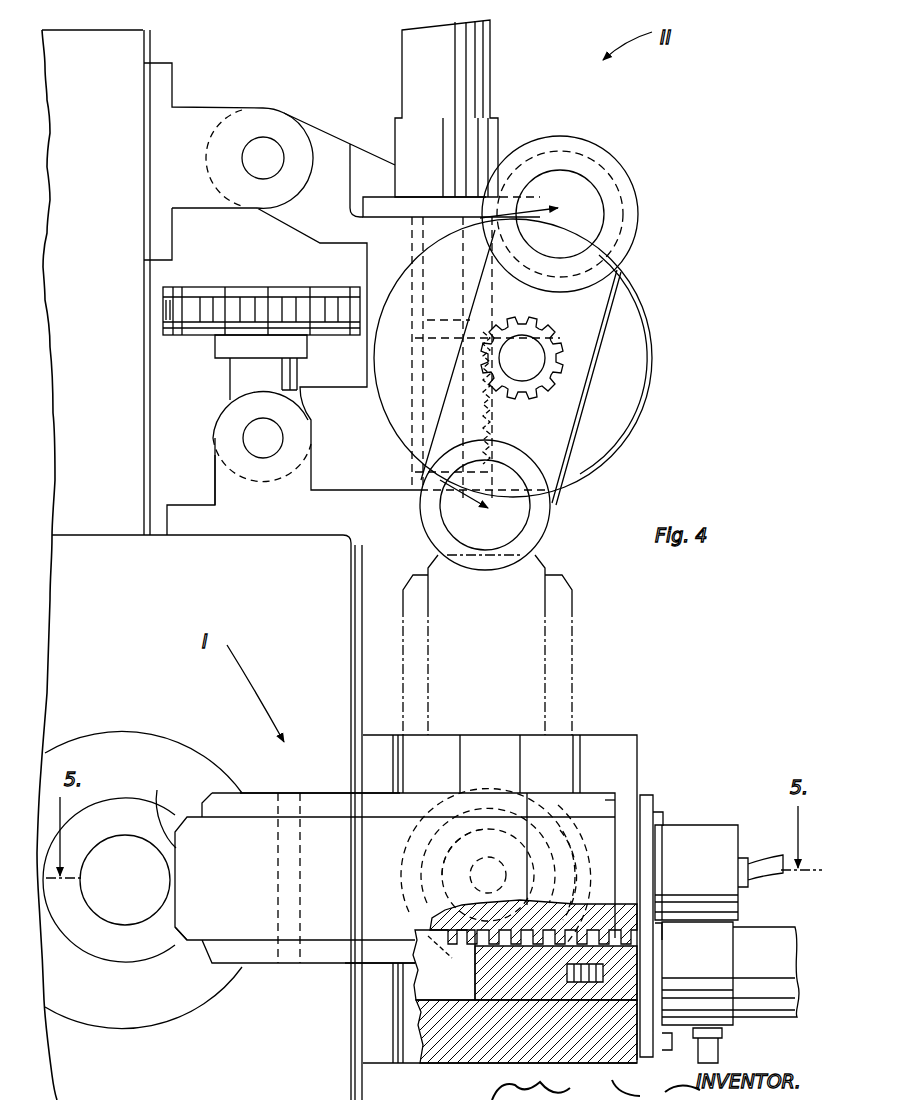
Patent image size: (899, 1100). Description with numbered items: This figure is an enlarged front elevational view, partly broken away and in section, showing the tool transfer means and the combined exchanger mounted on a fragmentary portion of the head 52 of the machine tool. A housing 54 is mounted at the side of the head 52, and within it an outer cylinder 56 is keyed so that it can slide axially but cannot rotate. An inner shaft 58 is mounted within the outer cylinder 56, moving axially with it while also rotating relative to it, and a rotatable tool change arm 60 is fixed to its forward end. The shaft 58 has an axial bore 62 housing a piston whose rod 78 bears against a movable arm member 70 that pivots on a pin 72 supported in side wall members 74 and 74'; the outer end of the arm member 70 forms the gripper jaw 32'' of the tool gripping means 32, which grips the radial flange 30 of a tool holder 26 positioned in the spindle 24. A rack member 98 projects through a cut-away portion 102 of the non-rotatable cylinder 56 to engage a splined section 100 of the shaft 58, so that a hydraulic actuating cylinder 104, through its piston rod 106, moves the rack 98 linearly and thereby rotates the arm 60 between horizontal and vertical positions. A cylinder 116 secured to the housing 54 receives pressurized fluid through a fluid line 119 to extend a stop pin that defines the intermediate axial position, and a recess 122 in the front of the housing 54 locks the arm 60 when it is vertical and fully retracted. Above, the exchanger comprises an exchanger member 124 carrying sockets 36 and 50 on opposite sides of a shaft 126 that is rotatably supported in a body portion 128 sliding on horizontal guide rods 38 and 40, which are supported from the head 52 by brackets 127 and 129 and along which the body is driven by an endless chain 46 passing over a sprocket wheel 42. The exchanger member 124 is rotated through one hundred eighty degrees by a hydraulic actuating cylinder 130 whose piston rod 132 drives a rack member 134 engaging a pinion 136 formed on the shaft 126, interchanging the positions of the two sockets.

The spindle 24 is at (133, 733).
The tool holder 26 is at (92, 918).
The radial flange 30 is at (113, 952).
The tool gripping means 32 is at (171, 961).
The gripper jaw 32'' is at (158, 804).
The socket 36 is at (572, 168).
The horizontal guide rod 38 is at (268, 148).
The horizontal guide rod 40 is at (254, 434).
The sprocket wheel 42 is at (214, 290).
The endless chain 46 is at (164, 318).
The socket 50 is at (528, 518).
The head 52 is at (112, 228).
The housing 54 is at (628, 754).
The outer cylinder 56 is at (612, 802).
The inner shaft 58 is at (418, 870).
The rotatable tool change arm 60 is at (582, 613).
The axial bore 62 is at (466, 836).
The movable arm member 70 is at (348, 898).
The pin 72 is at (278, 878).
The side wall member 74 is at (320, 774).
The side wall member 74' is at (365, 986).
The piston rod 78 is at (493, 868).
The rack member 98 is at (438, 1062).
The splined section 100 is at (444, 965).
The cut-away portion 102 is at (588, 875).
The hydraulic actuating cylinder 104 is at (784, 970).
The piston rod 106 is at (606, 1058).
The housing member or cylinder 116 is at (710, 833).
The fluid line 119 is at (767, 882).
The recess 122 is at (568, 742).
The exchanger member 124 is at (582, 418).
The shaft 126 is at (545, 357).
The bracket 127 is at (205, 122).
The body portion 128 is at (653, 396).
The bracket 129 is at (216, 482).
The hydraulic actuating cylinder 130 is at (486, 70).
The piston rod 132 is at (438, 290).
The rack member 134 is at (428, 412).
The pinion 136 is at (518, 400).